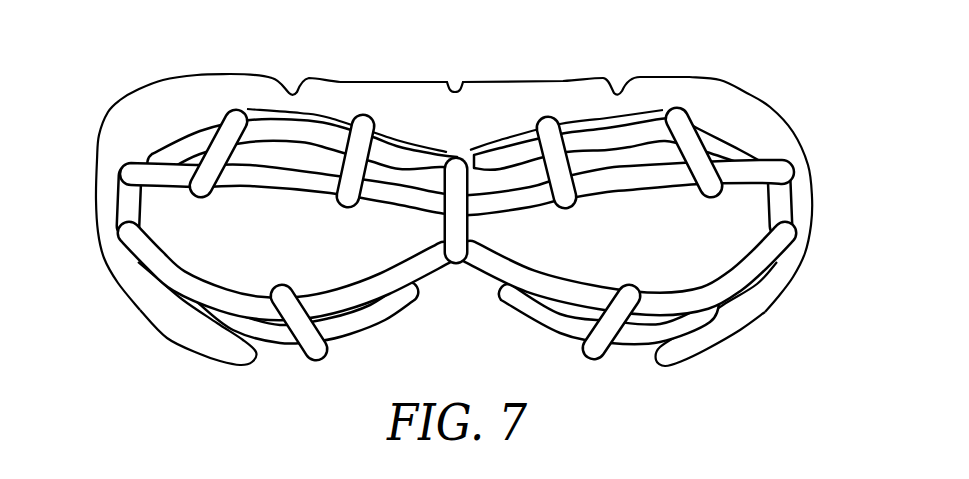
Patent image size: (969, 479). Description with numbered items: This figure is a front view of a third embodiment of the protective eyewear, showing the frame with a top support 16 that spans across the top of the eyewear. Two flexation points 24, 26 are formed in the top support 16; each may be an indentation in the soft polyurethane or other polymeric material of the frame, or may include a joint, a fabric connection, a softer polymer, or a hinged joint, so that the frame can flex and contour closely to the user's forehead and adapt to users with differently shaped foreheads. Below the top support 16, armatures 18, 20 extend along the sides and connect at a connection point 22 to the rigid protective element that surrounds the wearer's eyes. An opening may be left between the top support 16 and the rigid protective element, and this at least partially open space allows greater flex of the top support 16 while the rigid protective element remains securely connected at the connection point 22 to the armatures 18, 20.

The top support 16 is at (450, 90).
The armature 18 is at (98, 175).
The armature 20 is at (812, 197).
The connection point 22 is at (138, 258).
The flexation point 24 is at (293, 92).
The flexation point 26 is at (618, 92).